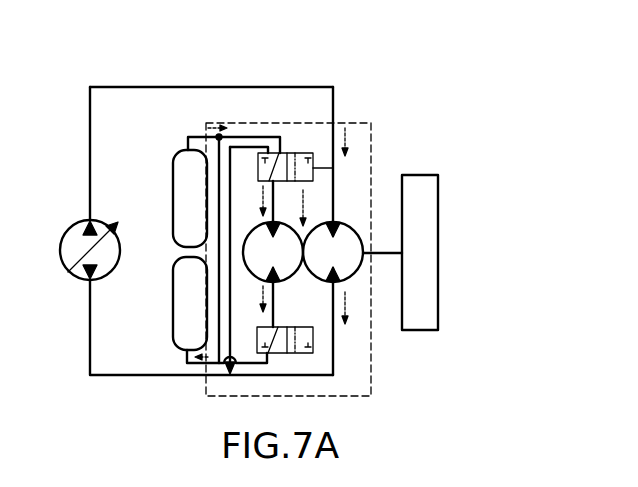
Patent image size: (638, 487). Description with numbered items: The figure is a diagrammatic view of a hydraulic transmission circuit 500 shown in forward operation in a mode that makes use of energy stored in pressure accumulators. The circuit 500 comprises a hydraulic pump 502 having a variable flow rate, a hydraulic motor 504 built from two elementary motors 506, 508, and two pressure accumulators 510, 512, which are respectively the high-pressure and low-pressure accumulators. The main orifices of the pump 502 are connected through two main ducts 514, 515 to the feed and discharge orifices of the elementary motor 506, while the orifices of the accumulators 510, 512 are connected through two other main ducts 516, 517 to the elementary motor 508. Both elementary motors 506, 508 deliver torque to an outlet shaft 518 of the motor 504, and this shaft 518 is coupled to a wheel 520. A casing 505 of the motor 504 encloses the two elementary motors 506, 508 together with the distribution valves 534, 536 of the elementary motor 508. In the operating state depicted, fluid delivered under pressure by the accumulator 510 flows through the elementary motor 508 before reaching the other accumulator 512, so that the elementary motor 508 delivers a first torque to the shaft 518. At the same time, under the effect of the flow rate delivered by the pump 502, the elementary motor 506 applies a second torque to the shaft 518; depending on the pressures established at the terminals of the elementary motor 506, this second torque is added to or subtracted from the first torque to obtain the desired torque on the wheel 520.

The hydraulic circuit 500 is at (222, 73).
The hydraulic pump 502 is at (98, 222).
The hydraulic motor 504 is at (288, 194).
The casing 505 is at (372, 393).
The elementary motor 506 is at (352, 233).
The elementary motor 508 is at (289, 268).
The pressure accumulator 510 is at (181, 183).
The pressure accumulator 512 is at (180, 294).
The main duct 514 is at (336, 117).
The main duct 515 is at (118, 376).
The main duct 516 is at (280, 136).
The main duct 517 is at (190, 362).
The outlet shaft 518 is at (370, 254).
The wheel 520 is at (418, 177).
The distribution valve 534 is at (334, 168).
The distribution valve 536 is at (313, 338).